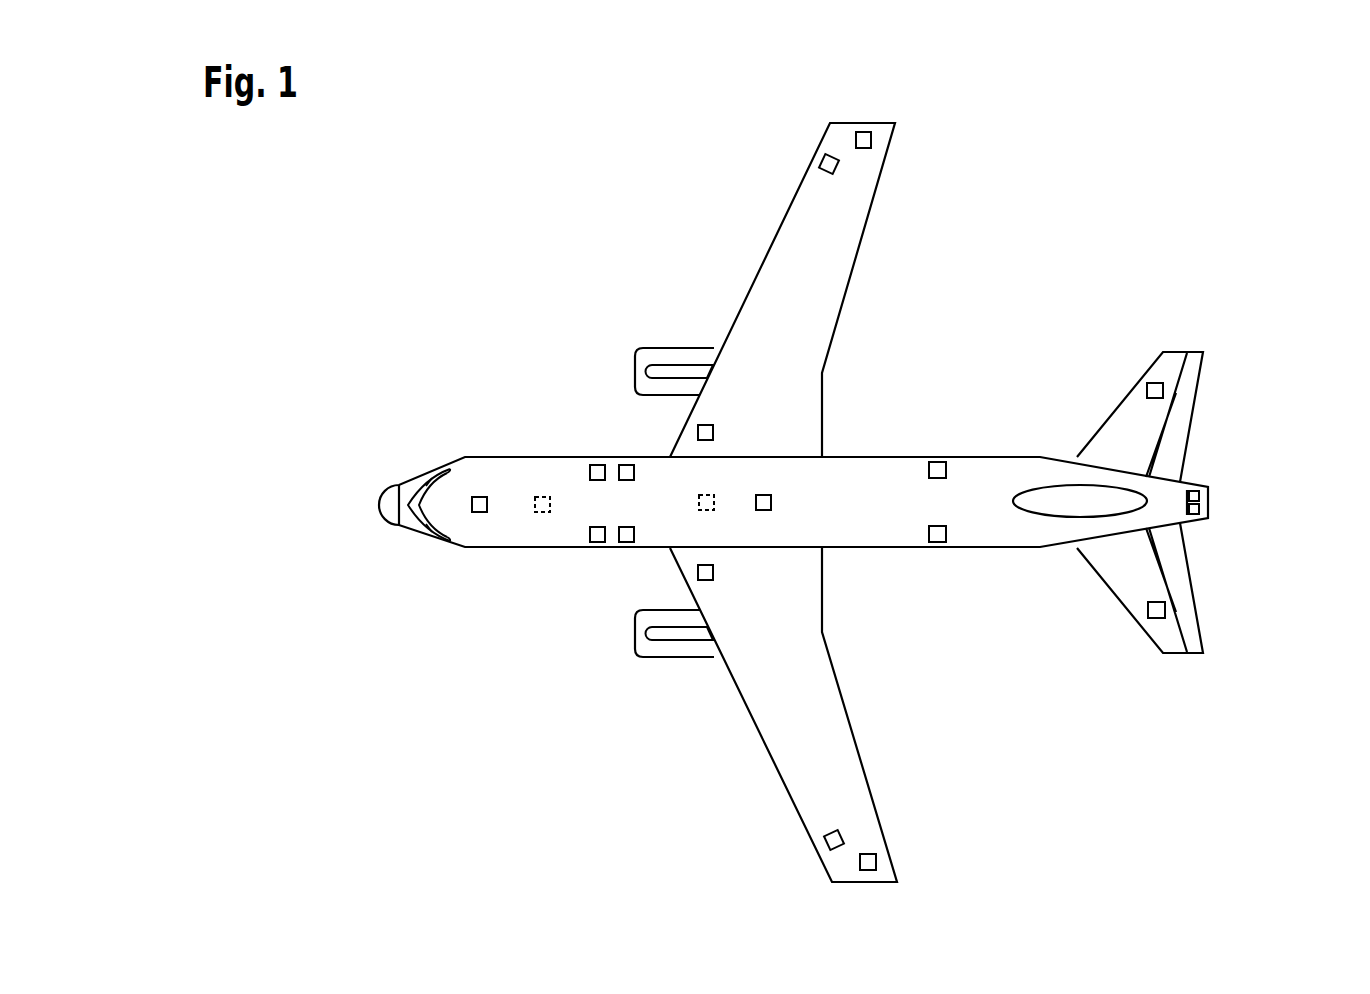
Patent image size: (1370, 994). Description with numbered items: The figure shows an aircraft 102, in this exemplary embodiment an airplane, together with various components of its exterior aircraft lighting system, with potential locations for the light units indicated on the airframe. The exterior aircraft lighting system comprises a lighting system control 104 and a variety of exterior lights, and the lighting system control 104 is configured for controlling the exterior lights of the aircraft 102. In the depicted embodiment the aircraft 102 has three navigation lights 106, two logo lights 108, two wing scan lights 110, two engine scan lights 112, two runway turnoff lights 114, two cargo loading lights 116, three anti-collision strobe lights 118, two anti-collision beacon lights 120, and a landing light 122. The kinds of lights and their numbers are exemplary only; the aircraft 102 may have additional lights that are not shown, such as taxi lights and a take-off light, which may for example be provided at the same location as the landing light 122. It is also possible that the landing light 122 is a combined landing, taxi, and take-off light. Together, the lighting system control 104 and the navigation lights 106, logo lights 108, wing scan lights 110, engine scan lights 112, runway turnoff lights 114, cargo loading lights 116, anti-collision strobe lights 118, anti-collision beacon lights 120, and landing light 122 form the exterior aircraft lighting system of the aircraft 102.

The aircraft 102 is at (1118, 244).
The lighting system control 104 is at (480, 497).
The navigation lights 106 is at (822, 162).
The logo lights 108 is at (1147, 390).
The wing scan lights 110 is at (597, 465).
The engine scan lights 112 is at (627, 465).
The runway turnoff lights 114 is at (713, 432).
The cargo loading lights 116 is at (937, 462).
The anti-collision strobe lights 118 is at (872, 140).
The anti-collision beacon lights 120 is at (706, 495).
The landing light 122 is at (538, 512).